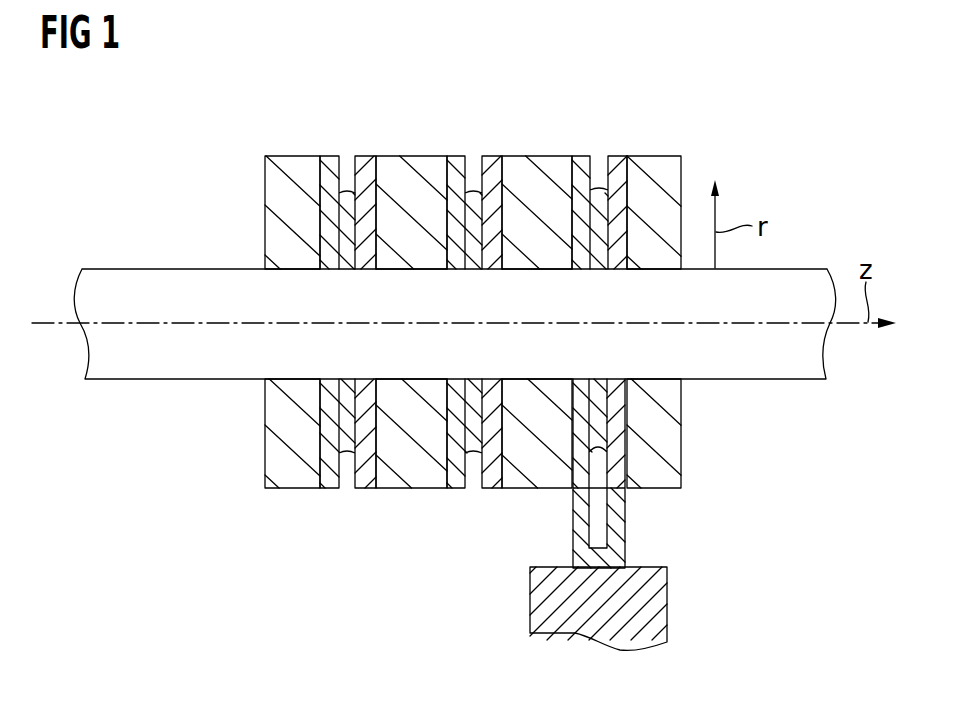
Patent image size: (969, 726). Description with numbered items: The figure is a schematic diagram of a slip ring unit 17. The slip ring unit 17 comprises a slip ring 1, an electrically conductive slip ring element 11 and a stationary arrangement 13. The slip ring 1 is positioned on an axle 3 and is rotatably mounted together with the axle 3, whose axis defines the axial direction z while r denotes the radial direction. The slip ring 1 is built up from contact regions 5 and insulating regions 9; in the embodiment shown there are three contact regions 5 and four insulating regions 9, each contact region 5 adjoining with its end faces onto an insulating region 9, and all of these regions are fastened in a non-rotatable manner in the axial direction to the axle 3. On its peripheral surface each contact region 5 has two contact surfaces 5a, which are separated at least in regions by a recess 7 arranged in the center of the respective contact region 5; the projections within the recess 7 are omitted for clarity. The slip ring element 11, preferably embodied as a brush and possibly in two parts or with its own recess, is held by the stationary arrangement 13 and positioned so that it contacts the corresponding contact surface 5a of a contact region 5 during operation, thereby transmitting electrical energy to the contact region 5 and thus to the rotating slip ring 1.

The slip ring 1 is at (527, 295).
The axle 3 is at (42, 323).
The contact region 5 is at (352, 159).
The contact surface 5a is at (363, 155).
The recess 7 is at (345, 456).
The insulating region 9 is at (292, 473).
The slip ring element 11 is at (572, 528).
The stationary arrangement 13 is at (605, 625).
The slip ring unit 17 is at (553, 77).